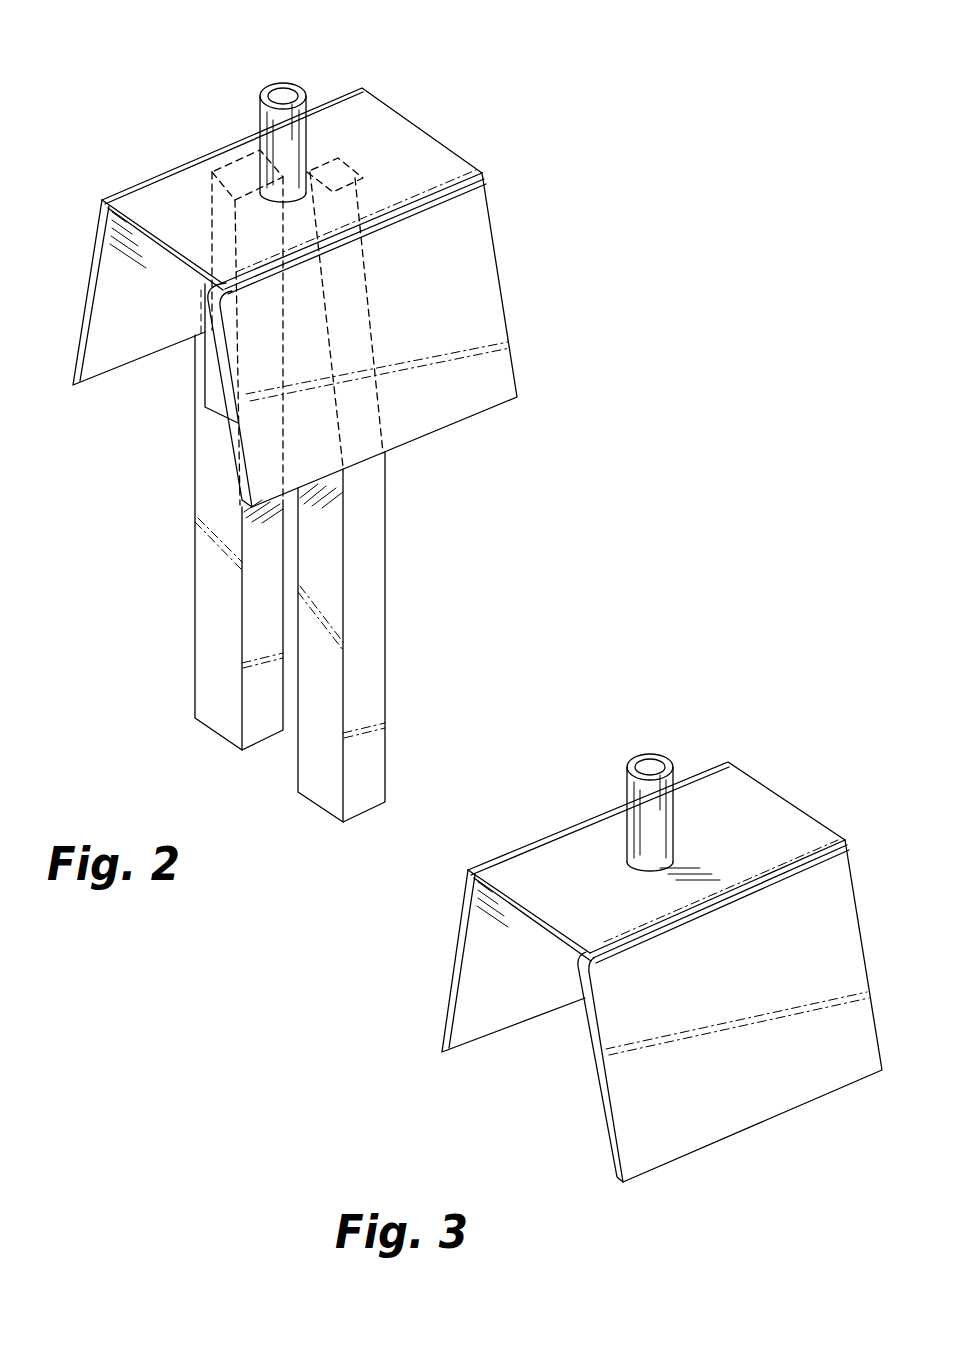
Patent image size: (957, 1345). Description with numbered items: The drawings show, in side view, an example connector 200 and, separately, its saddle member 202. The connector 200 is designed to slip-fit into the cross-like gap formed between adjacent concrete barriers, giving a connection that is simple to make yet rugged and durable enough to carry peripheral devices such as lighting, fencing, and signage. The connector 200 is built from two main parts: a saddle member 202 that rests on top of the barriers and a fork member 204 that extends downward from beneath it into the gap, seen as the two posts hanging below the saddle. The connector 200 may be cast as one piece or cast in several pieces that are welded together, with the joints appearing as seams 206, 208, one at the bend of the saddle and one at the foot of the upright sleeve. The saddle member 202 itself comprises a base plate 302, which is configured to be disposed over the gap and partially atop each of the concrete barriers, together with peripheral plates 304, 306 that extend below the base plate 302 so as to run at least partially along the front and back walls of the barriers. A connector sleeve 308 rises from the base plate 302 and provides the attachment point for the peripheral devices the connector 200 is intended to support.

In FIG. 2, the connector 200 is at (116, 112).
In FIG. 2, the saddle member 202 is at (505, 251).
In FIG. 3, the saddle member 202 is at (782, 750).
In FIG. 2, the fork member 204 is at (191, 548).
In FIG. 2, the seam 206 is at (197, 328).
In FIG. 2, the seam 208 is at (258, 184).
In FIG. 3, the base plate 302 is at (527, 868).
In FIG. 3, the peripheral plate 304 is at (503, 1020).
In FIG. 3, the peripheral plate 306 is at (600, 1112).
In FIG. 3, the connector sleeve 308 is at (628, 790).